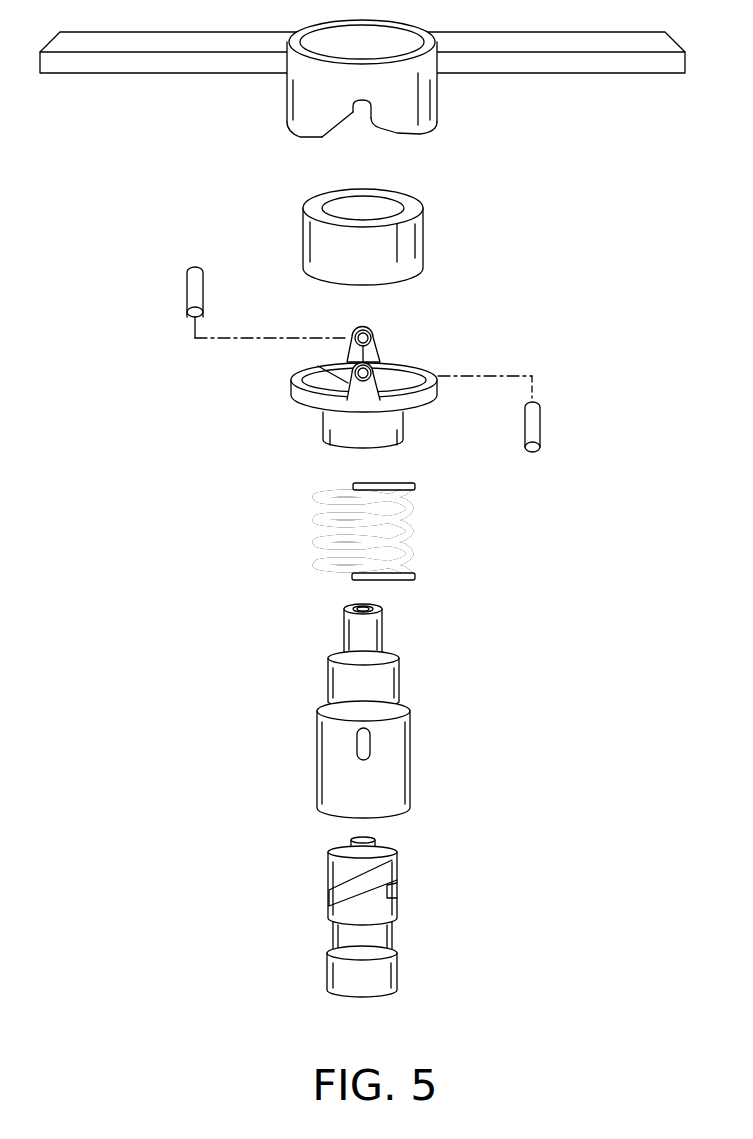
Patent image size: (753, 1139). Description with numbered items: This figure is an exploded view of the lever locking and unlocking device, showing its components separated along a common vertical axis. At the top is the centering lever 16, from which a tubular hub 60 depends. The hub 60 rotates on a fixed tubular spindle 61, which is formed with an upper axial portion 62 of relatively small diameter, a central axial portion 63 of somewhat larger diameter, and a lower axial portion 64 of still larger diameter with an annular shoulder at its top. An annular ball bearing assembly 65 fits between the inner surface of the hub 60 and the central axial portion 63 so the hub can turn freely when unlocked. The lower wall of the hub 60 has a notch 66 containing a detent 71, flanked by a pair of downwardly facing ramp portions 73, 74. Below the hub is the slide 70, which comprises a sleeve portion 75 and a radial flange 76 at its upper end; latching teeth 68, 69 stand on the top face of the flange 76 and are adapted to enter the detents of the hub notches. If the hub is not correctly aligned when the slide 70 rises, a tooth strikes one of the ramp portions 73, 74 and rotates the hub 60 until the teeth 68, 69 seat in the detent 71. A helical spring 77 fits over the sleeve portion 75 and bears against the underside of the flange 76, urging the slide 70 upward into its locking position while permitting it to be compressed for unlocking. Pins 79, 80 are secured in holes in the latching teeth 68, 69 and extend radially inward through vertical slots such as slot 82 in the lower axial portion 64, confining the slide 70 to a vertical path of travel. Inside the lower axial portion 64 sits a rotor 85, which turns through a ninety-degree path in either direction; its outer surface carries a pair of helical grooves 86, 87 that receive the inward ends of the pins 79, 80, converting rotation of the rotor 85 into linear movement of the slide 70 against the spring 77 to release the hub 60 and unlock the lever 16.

The lever 16 is at (362, 106).
The hub 60 is at (380, 106).
The spindle 61 is at (401, 711).
The upper axial portion 62 is at (373, 628).
The central axial portion 63 is at (388, 680).
The lower axial portion 64 is at (375, 759).
The annular ball bearing assembly 65 is at (441, 244).
The notch 66 is at (347, 133).
The latching tooth 68 is at (374, 345).
The latching tooth 69 is at (320, 372).
The slide 70 is at (363, 414).
The detent 71 is at (371, 118).
The ramp portion 73 is at (322, 138).
The ramp portion 74 is at (400, 136).
The sleeve portion 75 is at (330, 432).
The radial flange 76 is at (293, 390).
The helical spring 77 is at (417, 532).
The pin 79 is at (187, 283).
The pin 80 is at (541, 425).
The vertical slot 82 is at (357, 743).
The rotor 85 is at (404, 917).
The helical groove 86 is at (375, 881).
The helical groove 87 is at (398, 895).